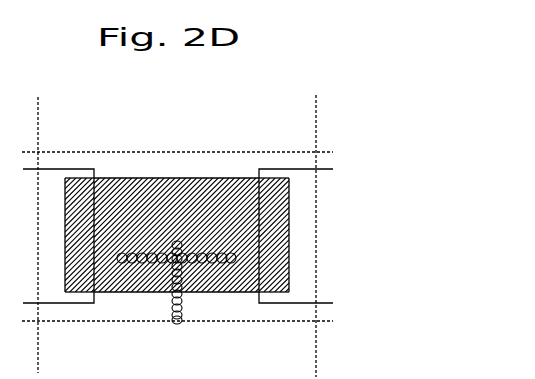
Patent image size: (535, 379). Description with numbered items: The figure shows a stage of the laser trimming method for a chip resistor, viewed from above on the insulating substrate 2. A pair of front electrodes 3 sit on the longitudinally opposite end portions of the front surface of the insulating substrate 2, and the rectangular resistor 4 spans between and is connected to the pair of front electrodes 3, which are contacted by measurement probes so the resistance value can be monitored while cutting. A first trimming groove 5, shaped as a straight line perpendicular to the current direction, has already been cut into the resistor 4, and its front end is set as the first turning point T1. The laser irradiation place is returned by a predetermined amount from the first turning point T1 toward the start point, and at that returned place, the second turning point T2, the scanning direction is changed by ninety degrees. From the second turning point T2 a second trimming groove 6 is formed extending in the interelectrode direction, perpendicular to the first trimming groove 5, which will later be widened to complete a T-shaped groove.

The insulating substrate 2 is at (125, 153).
The front electrodes 3 is at (62, 176).
The resistor 4 is at (213, 178).
The first trimming groove 5 is at (181, 271).
The second trimming groove 6 is at (125, 263).
The first turning point T1 is at (176, 242).
The second turning point T2 is at (175, 266).